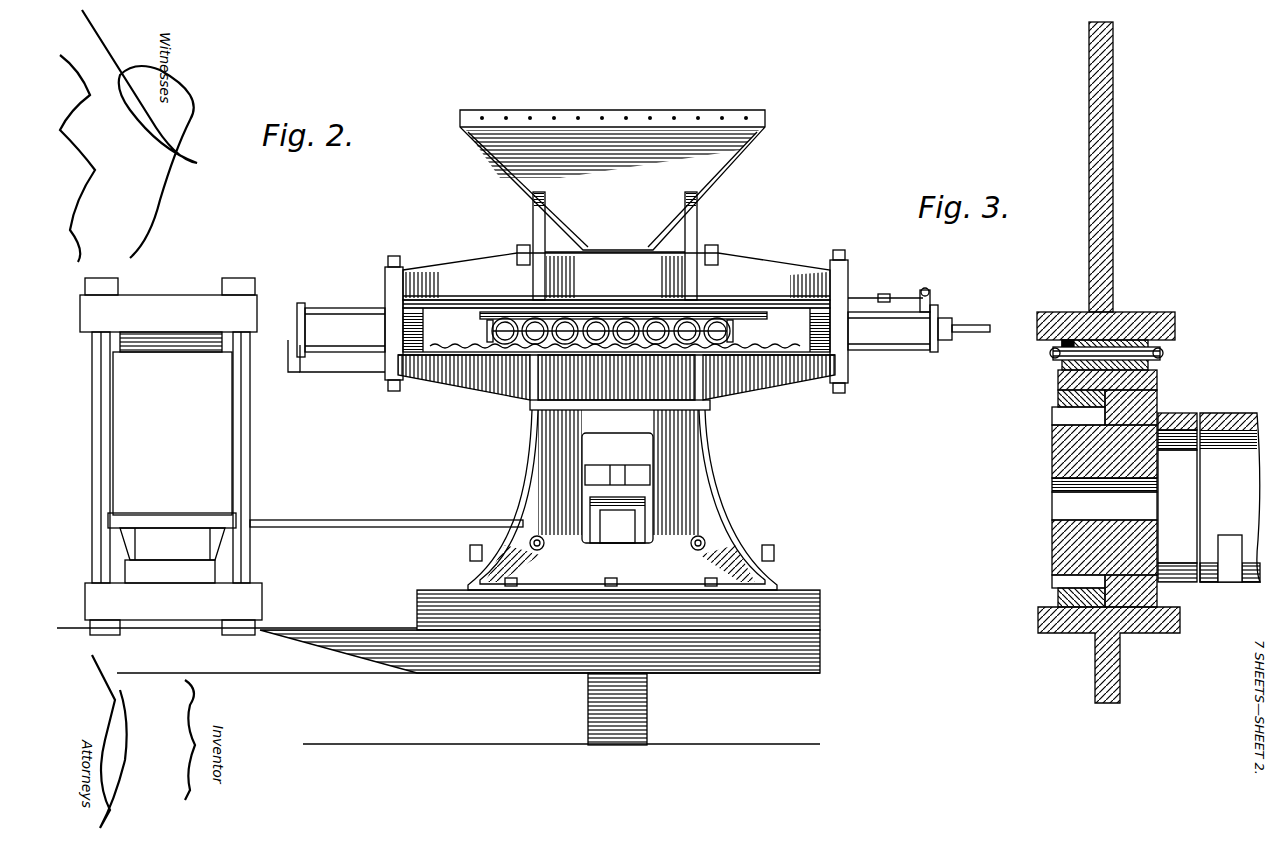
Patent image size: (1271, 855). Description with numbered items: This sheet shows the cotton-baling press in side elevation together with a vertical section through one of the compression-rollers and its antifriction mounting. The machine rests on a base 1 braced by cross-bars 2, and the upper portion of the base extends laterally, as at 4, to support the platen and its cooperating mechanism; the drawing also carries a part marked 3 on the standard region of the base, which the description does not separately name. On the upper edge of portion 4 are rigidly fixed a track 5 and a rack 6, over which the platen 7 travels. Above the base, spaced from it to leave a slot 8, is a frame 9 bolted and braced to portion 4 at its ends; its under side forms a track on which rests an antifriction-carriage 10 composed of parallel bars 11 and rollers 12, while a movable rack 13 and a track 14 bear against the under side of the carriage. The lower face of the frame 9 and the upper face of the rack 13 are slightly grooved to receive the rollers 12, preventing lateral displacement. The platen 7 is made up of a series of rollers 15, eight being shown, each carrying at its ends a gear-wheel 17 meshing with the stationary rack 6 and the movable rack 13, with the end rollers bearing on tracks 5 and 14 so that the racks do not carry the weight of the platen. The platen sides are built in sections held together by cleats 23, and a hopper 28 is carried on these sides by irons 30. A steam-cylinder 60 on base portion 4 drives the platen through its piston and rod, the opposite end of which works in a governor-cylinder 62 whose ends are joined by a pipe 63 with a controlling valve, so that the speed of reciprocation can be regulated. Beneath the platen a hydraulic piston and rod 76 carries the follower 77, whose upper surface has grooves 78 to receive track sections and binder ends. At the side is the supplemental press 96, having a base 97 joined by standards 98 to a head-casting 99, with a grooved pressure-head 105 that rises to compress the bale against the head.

In FIG. 2, the base 1 is at (705, 543).
In FIG. 3, the base 1 is at (1102, 718).
In FIG. 2, the cross-bars 2 is at (715, 548).
In FIG. 2, the standard / frame 3 is at (503, 292).
In FIG. 2, the laterally extending portion of the base 4 is at (616, 387).
In FIG. 3, the laterally extending portion of the base 4 is at (1109, 655).
In FIG. 3, the track 5 is at (1058, 595).
In FIG. 2, the rack 6 is at (760, 350).
In FIG. 3, the rack 6 is at (1160, 594).
In FIG. 2, the platen 7 is at (615, 240).
In FIG. 2, the slot 8 is at (808, 328).
In FIG. 3, the slot 8 is at (1163, 353).
In FIG. 2, the frame 9 is at (616, 269).
In FIG. 3, the frame 9 is at (1145, 312).
In FIG. 2, the antifriction-carriage 10 is at (640, 320).
In FIG. 3, the antifriction-carriage 10 is at (1053, 355).
In FIG. 2, the parallel bars 11 is at (603, 318).
In FIG. 3, the parallel bars 11 is at (1150, 342).
In FIG. 2, the rollers 12 is at (566, 318).
In FIG. 3, the rollers 12 is at (1068, 340).
In FIG. 3, the rack 13 is at (1058, 400).
In FIG. 3, the track 14 is at (1157, 398).
In FIG. 3, the rollers 15 is at (1209, 497).
In FIG. 2, the gear-wheel 17 is at (490, 352).
In FIG. 2, the cleats 23 is at (482, 330).
In FIG. 2, the hopper 28 is at (612, 180).
In FIG. 2, the irons 30 is at (533, 226).
In FIG. 2, the steam-cylinder 60 is at (336, 337).
In FIG. 2, the governor-cylinder 62 is at (919, 328).
In FIG. 2, the pipe 63 is at (900, 286).
In FIG. 2, the piston and rod 76 is at (645, 520).
In FIG. 2, the follower 77 is at (650, 476).
In FIG. 3, the grooves 78 is at (1230, 578).
In FIG. 2, the supplemental press 96 is at (171, 457).
In FIG. 2, the base 97 is at (173, 609).
In FIG. 2, the standards 98 is at (386, 499).
In FIG. 2, the head-casting 99 is at (178, 345).
In FIG. 2, the pressure-head 105 is at (180, 513).